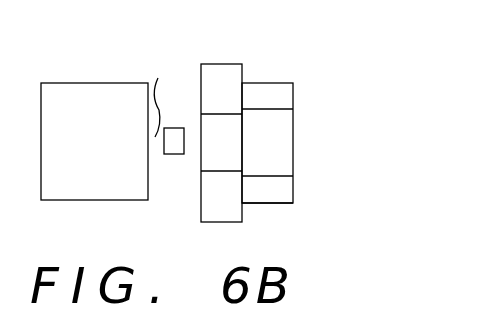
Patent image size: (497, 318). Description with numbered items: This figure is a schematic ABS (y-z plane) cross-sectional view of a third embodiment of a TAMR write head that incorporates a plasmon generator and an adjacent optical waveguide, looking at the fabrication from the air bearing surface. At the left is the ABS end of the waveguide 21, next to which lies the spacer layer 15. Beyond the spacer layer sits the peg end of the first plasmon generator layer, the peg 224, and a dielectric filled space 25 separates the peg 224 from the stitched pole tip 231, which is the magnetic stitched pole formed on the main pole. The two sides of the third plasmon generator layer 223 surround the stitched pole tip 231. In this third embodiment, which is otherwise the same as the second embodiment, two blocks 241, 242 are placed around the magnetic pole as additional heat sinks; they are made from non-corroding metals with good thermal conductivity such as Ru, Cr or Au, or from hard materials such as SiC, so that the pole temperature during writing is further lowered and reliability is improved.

The waveguide 21 is at (98, 98).
The spacer layer 15 is at (160, 97).
The peg end of layer 1 224 is at (172, 128).
The layer 3 223 is at (225, 73).
The heat sink block 241 is at (273, 95).
The heat sink block 242 is at (270, 190).
The dielectric filled space 25 is at (192, 147).
The stitched pole tip 231 is at (215, 160).